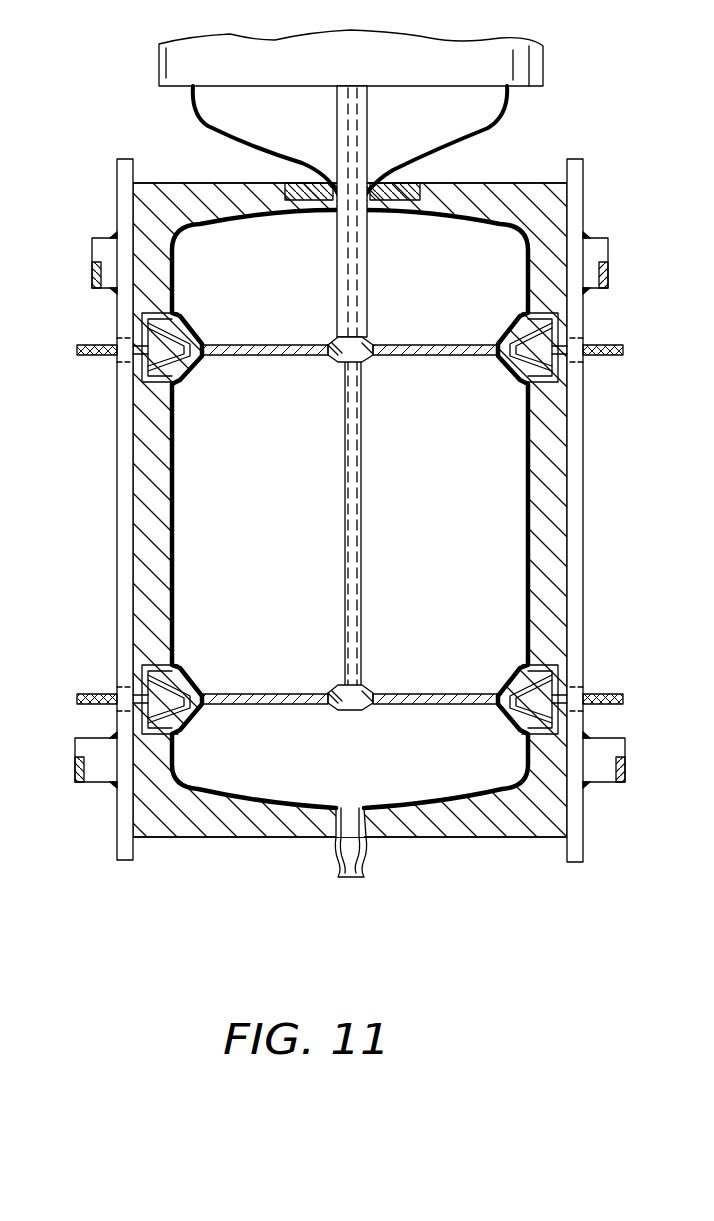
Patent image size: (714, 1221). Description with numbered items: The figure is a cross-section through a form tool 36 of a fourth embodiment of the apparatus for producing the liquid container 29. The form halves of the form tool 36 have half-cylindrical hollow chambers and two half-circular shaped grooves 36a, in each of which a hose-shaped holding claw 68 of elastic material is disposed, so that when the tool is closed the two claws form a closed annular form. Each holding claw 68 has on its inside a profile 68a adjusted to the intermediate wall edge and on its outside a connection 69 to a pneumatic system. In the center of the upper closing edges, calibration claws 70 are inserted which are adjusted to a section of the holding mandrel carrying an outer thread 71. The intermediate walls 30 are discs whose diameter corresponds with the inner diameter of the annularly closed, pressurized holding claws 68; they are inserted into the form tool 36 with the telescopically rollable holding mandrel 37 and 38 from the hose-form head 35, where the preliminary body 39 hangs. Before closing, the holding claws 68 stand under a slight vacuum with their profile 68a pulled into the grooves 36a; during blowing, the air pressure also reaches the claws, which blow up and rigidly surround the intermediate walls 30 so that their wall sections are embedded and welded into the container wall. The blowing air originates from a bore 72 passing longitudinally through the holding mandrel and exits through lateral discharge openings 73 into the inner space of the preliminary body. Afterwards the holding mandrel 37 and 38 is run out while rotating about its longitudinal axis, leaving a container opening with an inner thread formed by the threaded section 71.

The liquid container 29 is at (300, 775).
The intermediate walls 30 is at (404, 356).
The hose-form head 35 is at (528, 71).
The form tool 36 is at (565, 456).
The half-circular shaped grooves 36a is at (147, 656).
The holding mandrel 37 is at (363, 243).
The holding mandrel 38 is at (361, 566).
The liner neck 39 is at (510, 123).
The hose-shaped holding claw 68 is at (182, 362).
The profile 68a is at (195, 706).
The connection to a pneumatic system 69 is at (105, 353).
The calibration claws 70 is at (418, 187).
The outer thread 71 is at (354, 199).
The bore 72 is at (358, 439).
The lateral discharge openings 73 is at (356, 273).